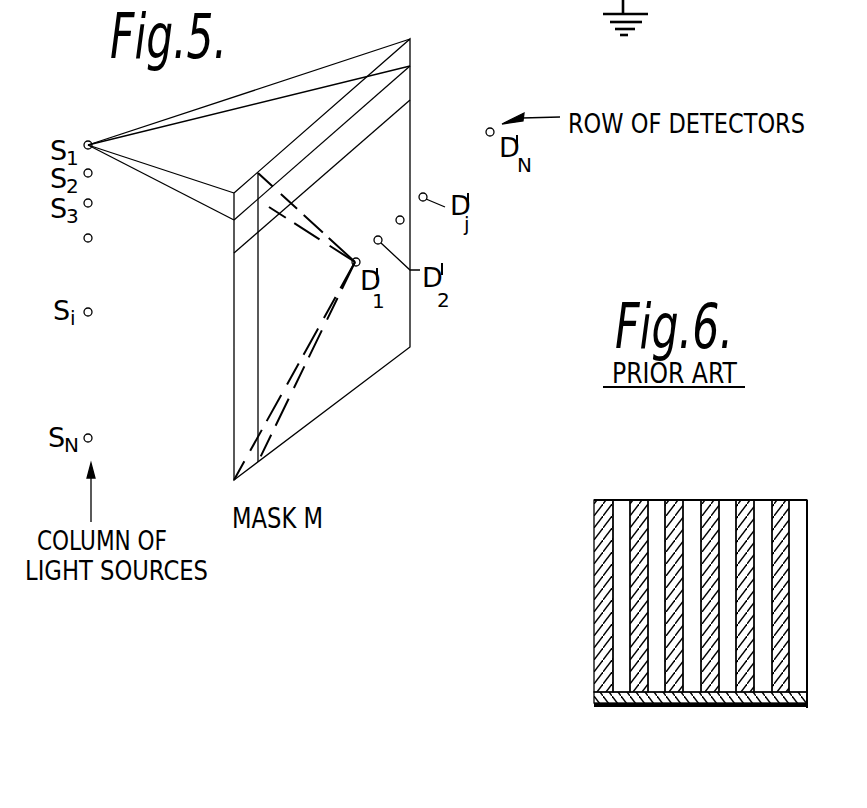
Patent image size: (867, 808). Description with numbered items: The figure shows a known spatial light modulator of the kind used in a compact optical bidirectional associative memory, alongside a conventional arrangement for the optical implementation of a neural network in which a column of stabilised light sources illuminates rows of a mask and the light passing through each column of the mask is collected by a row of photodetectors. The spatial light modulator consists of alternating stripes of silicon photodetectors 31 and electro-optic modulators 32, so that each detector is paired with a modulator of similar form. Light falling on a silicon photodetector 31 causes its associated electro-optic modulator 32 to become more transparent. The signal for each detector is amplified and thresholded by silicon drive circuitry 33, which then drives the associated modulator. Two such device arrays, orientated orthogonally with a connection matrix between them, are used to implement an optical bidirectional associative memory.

The silicon photodetectors 31 is at (603, 499).
The electro-optic modulators 32 is at (620, 499).
The silicon drive circuitry 33 is at (612, 709).